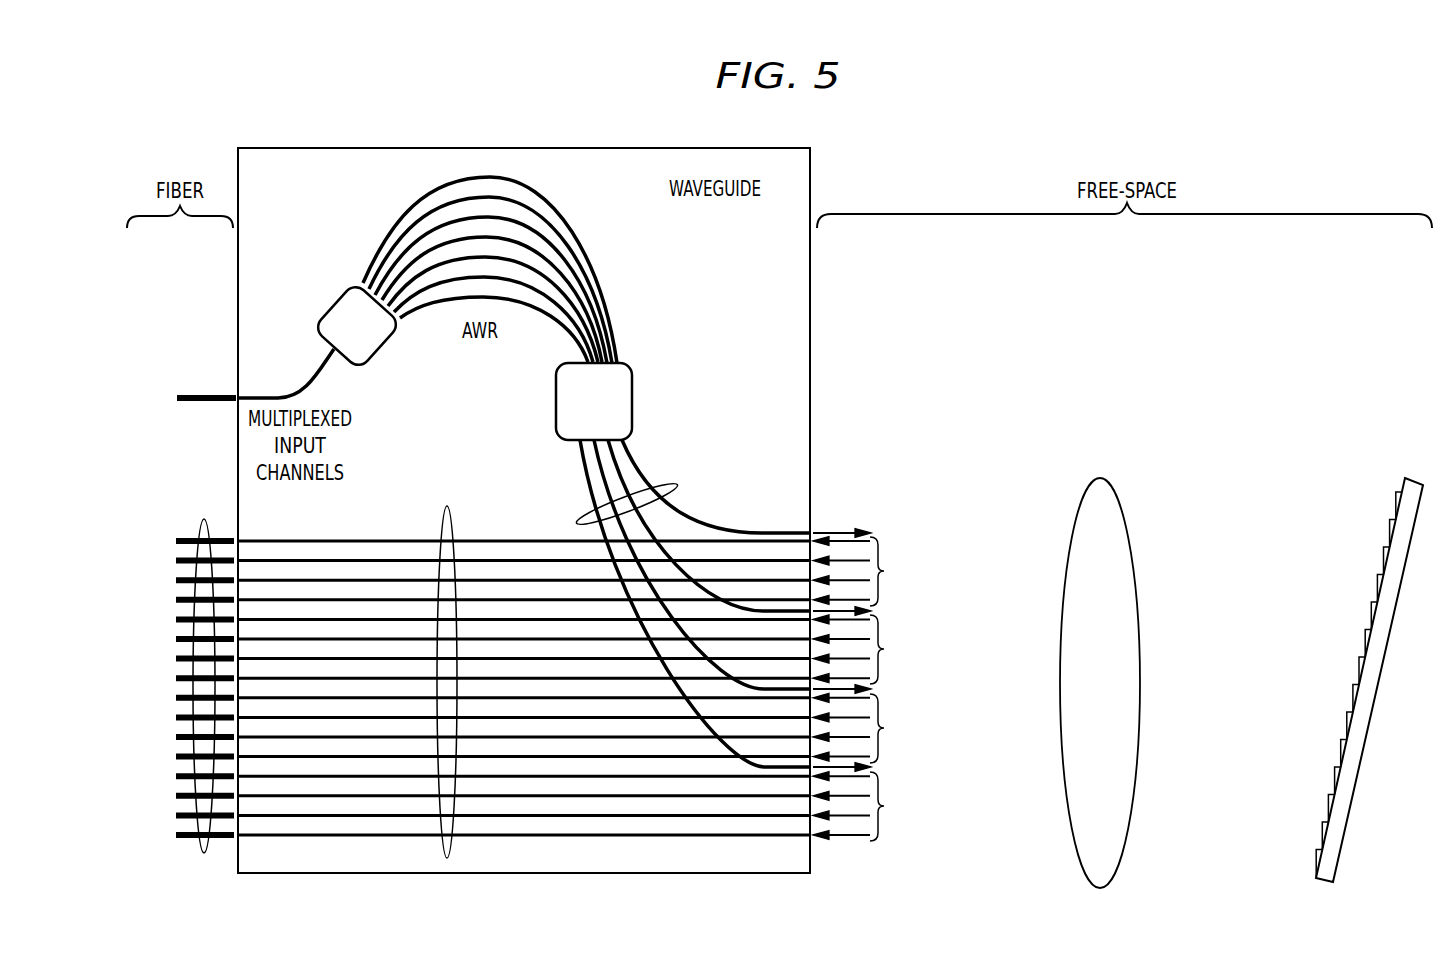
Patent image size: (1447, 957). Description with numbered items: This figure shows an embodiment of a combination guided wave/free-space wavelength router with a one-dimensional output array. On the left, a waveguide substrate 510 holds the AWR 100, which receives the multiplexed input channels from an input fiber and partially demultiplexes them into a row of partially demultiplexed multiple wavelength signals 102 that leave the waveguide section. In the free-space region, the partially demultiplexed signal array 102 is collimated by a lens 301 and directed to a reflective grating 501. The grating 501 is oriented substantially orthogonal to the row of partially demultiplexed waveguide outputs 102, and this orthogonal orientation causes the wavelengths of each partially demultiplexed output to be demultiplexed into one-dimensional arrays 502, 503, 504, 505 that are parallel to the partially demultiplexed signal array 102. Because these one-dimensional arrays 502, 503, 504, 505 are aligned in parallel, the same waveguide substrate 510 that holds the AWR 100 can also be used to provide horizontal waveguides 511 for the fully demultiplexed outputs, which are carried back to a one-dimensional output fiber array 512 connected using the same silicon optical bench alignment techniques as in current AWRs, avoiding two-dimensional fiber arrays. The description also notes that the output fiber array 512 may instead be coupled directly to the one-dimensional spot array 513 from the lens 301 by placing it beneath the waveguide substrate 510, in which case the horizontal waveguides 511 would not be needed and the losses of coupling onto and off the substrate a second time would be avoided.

The waveguide substrate 510 is at (524, 510).
The AWR 100 is at (606, 253).
The partially demultiplexed multiple wavelength signals 102 is at (700, 462).
The one-dimensional output fiber array 512 is at (204, 521).
The waveguides 511 is at (450, 506).
The one dimensional array 502 is at (894, 568).
The one dimensional array 503 is at (898, 646).
The one dimensional array 504 is at (898, 724).
The one dimensional array 505 is at (898, 802).
The one-dimensional spot array 513 is at (810, 861).
The lens 301 is at (1100, 478).
The reflective grating 501 is at (1404, 480).